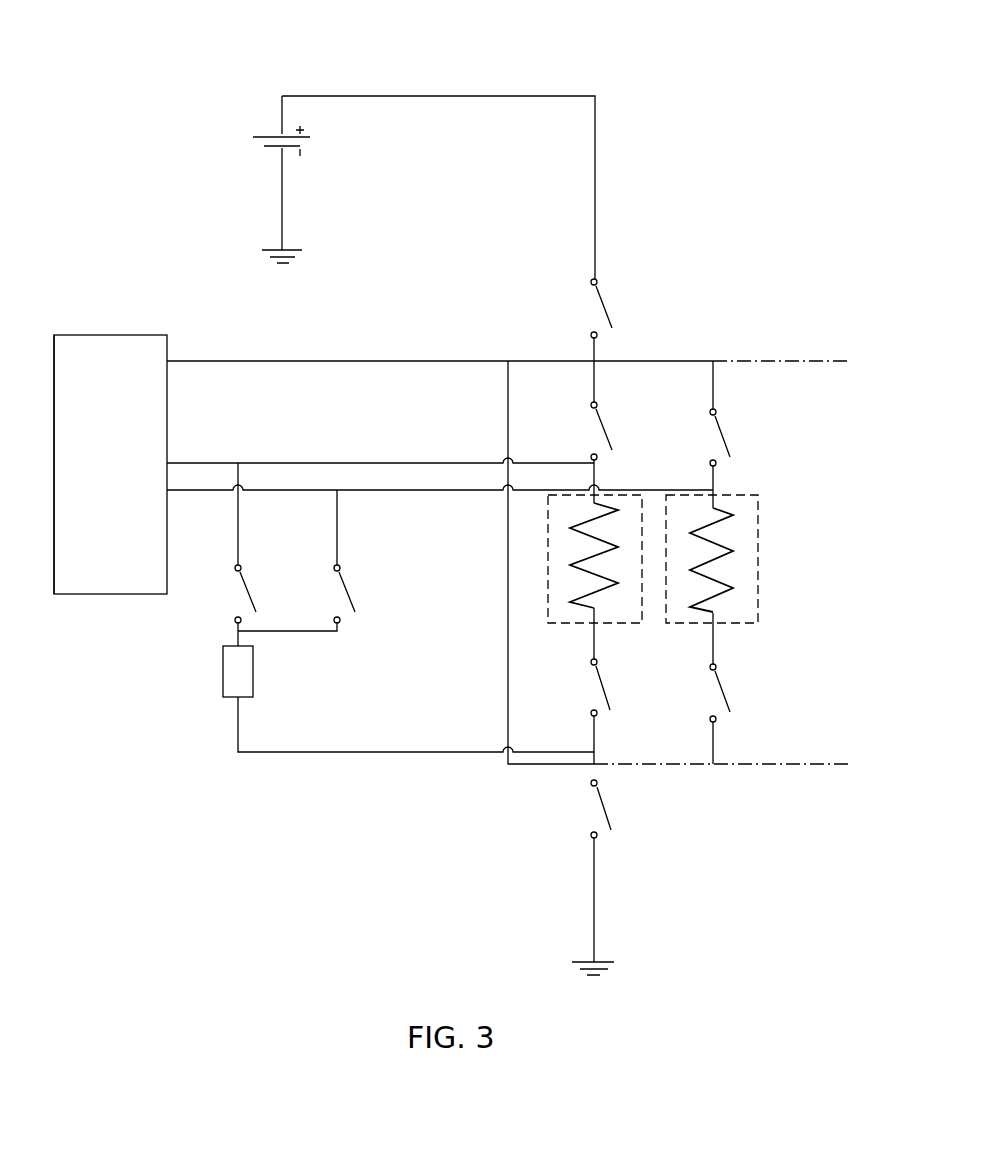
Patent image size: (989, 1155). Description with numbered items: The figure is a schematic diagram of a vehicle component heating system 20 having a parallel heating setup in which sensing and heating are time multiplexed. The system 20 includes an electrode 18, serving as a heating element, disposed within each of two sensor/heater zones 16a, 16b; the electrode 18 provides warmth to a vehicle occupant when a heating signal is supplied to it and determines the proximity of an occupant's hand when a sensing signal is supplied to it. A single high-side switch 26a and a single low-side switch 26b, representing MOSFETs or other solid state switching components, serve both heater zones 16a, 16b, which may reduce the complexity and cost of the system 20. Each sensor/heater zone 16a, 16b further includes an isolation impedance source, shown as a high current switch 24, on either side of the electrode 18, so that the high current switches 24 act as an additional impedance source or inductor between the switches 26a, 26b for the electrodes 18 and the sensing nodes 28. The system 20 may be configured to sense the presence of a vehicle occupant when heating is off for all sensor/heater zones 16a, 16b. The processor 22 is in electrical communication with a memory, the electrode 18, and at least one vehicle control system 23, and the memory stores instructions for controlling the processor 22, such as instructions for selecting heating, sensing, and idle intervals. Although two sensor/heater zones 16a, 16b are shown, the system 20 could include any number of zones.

The vehicle component heating system 20 is at (160, 70).
The processor 22 is at (90, 335).
The vehicle control system 23 is at (72, 335).
The high current switch 24 is at (616, 425).
The high-side switch 26a is at (614, 296).
The low-side switch 26b is at (628, 820).
The sensing node 28 is at (578, 457).
The electrode 18 is at (725, 511).
The first sensor/heater zone 16a is at (565, 624).
The second sensor/heater zone 16b is at (760, 535).